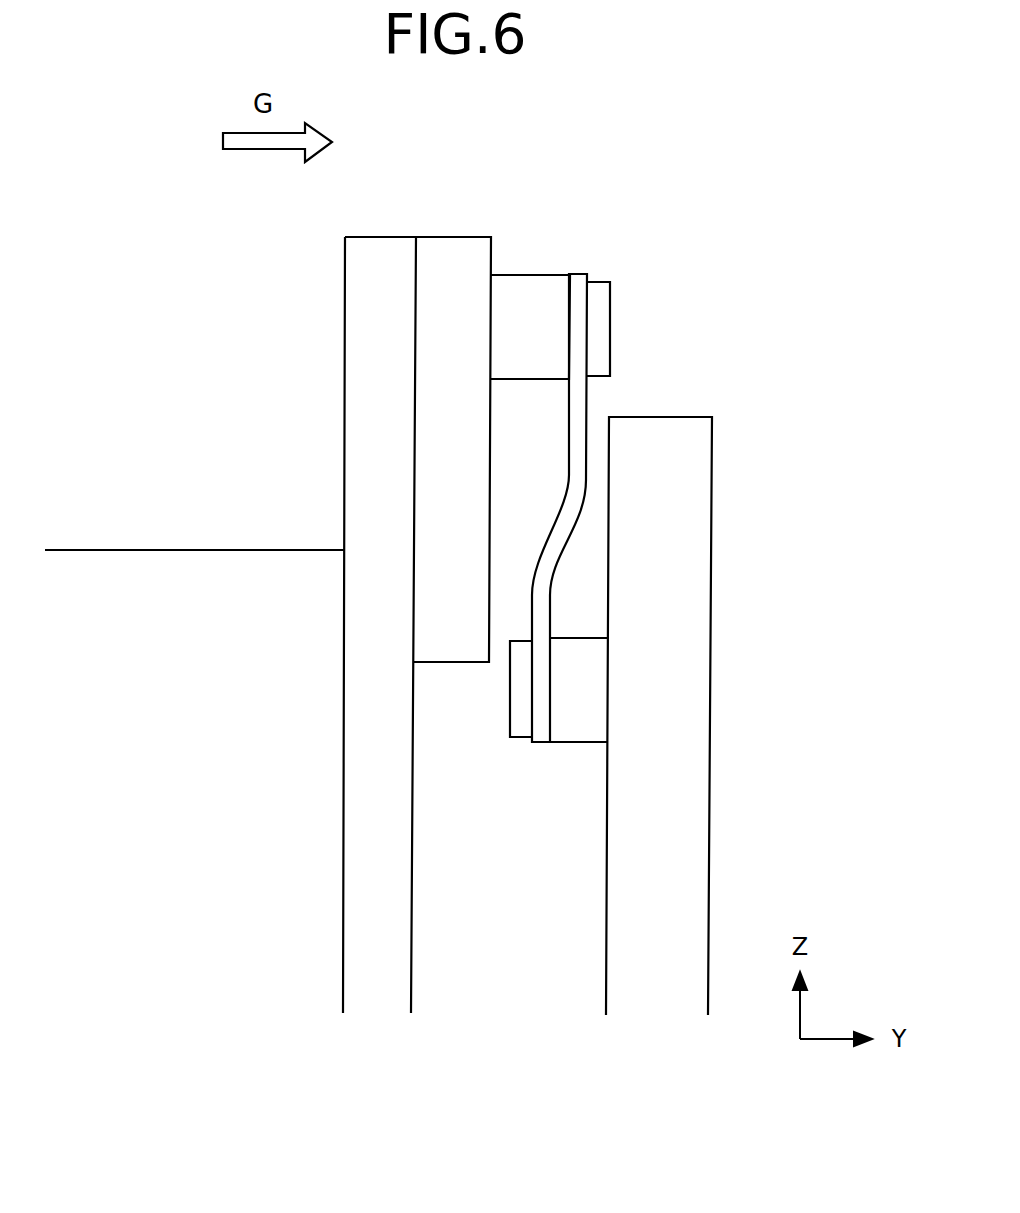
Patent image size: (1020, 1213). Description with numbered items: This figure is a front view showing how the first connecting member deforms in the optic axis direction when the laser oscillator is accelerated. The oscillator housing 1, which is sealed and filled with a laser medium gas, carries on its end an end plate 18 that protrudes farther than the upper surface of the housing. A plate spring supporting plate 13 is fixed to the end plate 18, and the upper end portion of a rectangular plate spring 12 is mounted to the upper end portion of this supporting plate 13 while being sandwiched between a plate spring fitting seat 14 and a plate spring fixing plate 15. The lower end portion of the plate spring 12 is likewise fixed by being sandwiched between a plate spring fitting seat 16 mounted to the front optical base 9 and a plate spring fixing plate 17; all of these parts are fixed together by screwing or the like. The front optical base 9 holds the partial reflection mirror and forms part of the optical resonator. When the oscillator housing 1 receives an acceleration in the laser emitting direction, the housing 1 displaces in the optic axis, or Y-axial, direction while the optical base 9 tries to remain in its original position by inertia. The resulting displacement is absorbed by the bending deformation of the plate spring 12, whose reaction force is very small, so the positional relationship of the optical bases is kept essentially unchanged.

The oscillator housing 1 is at (192, 550).
The front optical base 9 is at (712, 468).
The plate spring 12 is at (578, 274).
The plate spring supporting plate 13 is at (455, 237).
The plate spring fitting seat 14 is at (513, 275).
The plate spring fixing plate 15 is at (610, 297).
The plate spring fitting seat 16 is at (575, 742).
The plate spring fixing plate 17 is at (512, 742).
The end plate 18 is at (360, 283).